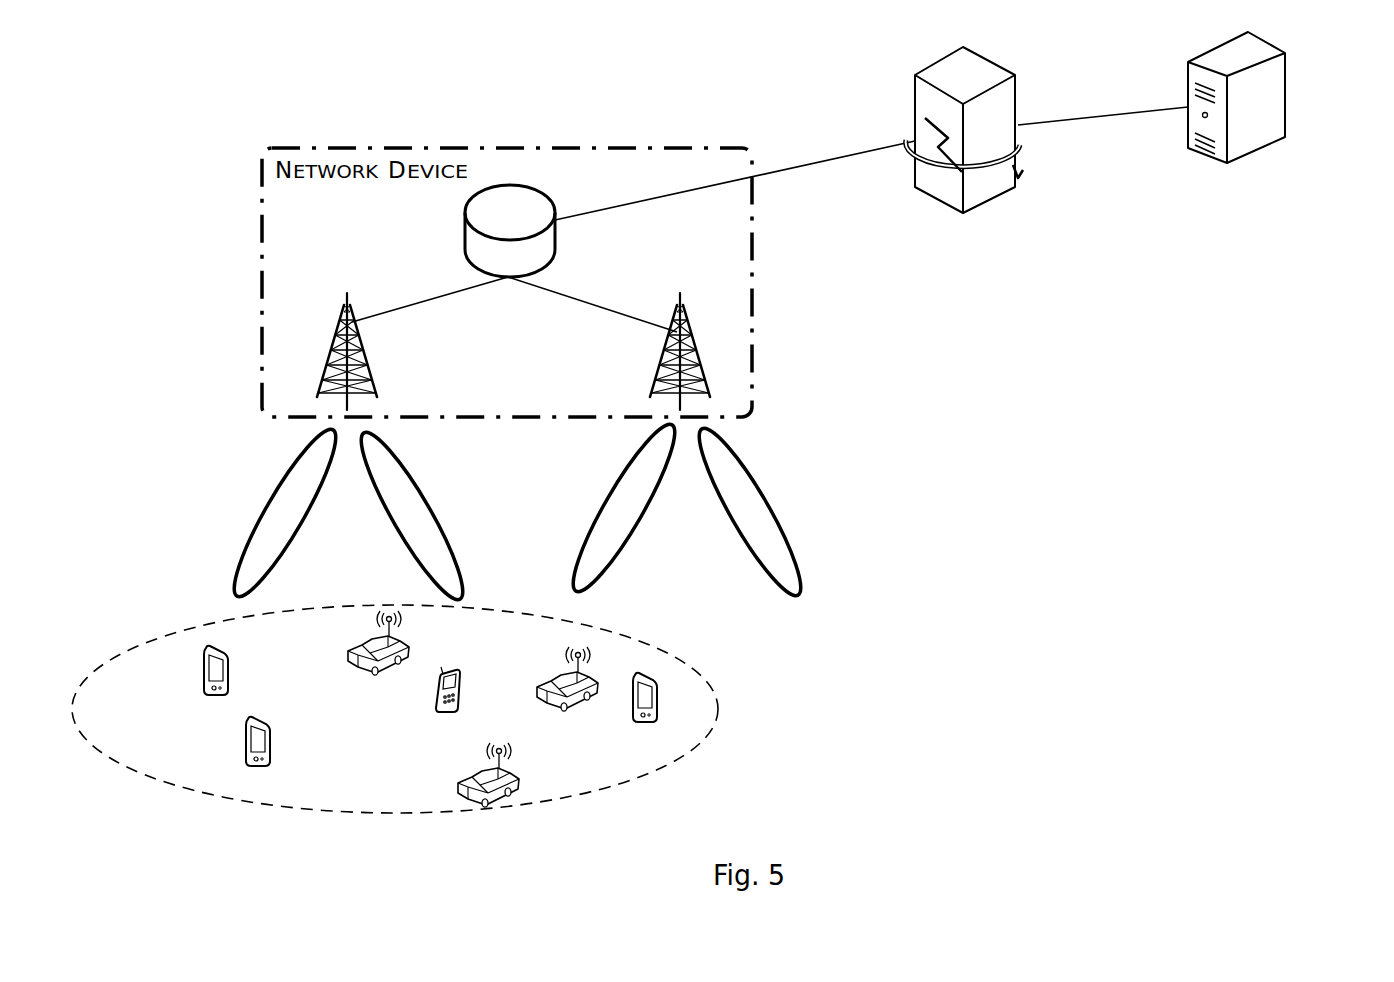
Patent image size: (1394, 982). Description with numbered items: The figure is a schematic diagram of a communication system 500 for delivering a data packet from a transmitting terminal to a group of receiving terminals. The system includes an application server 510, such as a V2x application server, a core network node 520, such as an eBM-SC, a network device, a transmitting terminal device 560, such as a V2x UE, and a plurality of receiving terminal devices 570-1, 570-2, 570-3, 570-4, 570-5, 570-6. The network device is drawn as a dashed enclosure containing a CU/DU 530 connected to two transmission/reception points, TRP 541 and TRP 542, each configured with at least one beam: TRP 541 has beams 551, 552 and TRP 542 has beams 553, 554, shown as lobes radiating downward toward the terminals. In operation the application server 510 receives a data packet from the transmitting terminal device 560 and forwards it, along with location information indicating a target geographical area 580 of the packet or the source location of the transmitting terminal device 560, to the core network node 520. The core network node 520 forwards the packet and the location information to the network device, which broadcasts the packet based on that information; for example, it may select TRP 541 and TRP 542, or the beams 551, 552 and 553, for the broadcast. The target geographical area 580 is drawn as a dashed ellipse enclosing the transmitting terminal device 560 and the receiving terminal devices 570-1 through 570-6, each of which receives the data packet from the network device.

The communication system 500 is at (1297, 802).
The application server 510 is at (1267, 229).
The core network node 520 is at (980, 277).
The CU/DU 530 is at (462, 236).
The TRP 541 is at (403, 292).
The TRP 542 is at (723, 292).
The beam 551 is at (265, 506).
The beam 552 is at (543, 506).
The beam 553 is at (710, 606).
The beam 554 is at (915, 571).
The transmitting terminal device 560 is at (467, 742).
The receiving terminal device 570-1 is at (242, 724).
The receiving terminal device 570-2 is at (295, 796).
The receiving terminal device 570-3 is at (413, 702).
The receiving terminal device 570-4 is at (523, 839).
The receiving terminal device 570-5 is at (607, 741).
The receiving terminal device 570-6 is at (685, 751).
The target geographical area 580 is at (710, 687).